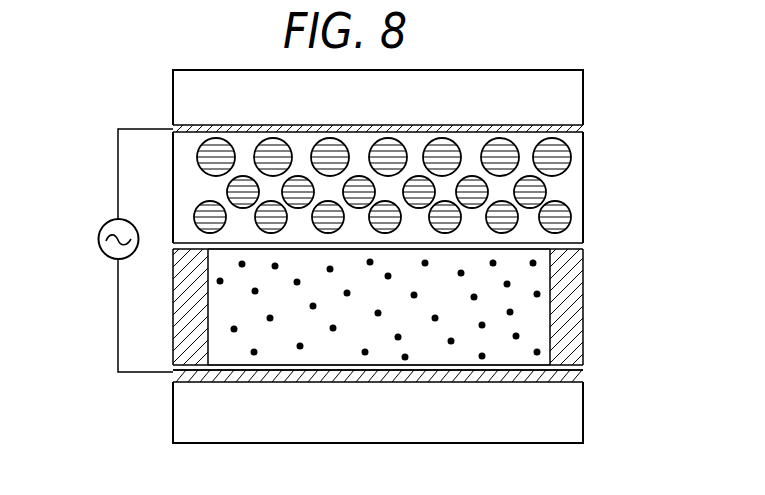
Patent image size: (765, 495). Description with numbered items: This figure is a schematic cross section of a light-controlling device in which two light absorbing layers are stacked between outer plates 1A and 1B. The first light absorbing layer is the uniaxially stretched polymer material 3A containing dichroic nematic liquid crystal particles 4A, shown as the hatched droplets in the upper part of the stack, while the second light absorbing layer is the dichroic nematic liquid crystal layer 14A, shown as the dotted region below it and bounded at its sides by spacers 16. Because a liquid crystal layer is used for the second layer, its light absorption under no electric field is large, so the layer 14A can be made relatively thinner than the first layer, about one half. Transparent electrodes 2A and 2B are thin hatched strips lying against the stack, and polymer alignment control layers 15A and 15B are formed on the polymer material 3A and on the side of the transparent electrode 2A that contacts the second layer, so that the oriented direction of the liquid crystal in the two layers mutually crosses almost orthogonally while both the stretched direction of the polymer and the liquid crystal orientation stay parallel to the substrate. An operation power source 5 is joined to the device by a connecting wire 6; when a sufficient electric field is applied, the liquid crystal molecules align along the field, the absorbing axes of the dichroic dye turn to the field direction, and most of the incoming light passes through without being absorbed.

The first substrate 1A is at (575, 424).
The second substrate 1B is at (578, 98).
The transparent electrode 2A is at (583, 377).
The second electrode 2B is at (583, 129).
The uniaxially stretched polymer material 3A is at (575, 194).
The dichroic nematic liquid crystal particles 4A is at (570, 158).
The operation power source 5 is at (98, 240).
The connecting wire 6 is at (118, 155).
The dichroic nematic liquid crystal layer 14A is at (535, 277).
The polymer alignment control layer 15A is at (583, 367).
The polymer alignment control layer 15B is at (583, 246).
The spacer 16 is at (578, 303).